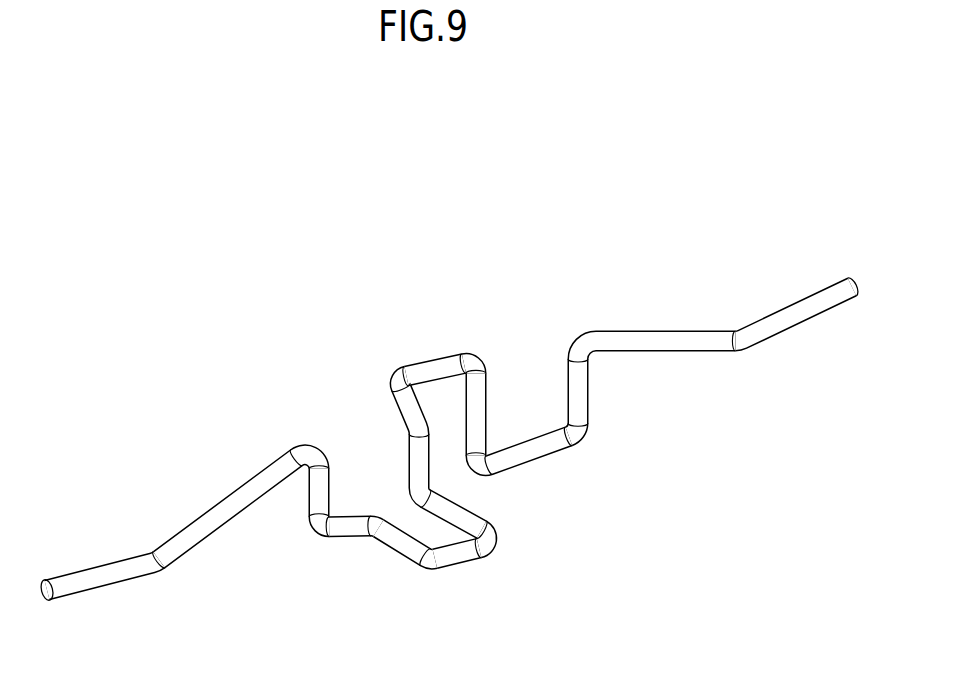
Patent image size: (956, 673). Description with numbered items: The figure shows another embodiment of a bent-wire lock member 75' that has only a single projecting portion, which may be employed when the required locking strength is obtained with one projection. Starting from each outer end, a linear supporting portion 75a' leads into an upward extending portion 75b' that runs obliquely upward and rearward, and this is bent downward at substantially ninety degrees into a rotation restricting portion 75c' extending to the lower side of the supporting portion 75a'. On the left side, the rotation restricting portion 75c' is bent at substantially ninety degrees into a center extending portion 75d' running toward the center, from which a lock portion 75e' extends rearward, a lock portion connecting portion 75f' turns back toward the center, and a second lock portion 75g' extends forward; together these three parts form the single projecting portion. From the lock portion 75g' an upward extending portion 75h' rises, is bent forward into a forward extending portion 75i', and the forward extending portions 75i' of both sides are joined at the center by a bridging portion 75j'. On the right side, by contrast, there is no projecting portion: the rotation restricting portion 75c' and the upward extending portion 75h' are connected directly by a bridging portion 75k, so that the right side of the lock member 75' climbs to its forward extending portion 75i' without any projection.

The lock member 75' is at (448, 413).
The linear supporting portion 75a' is at (448, 440).
The upward extending portion 75b' is at (447, 450).
The rotation restricting portion 75c' is at (449, 441).
The center extending portion 75d' is at (337, 556).
The lock portion 75e' is at (414, 564).
The lock portion connecting portion 75f' is at (479, 579).
The lock portion 75g' is at (495, 520).
The upward extending portion 75h' is at (447, 451).
The forward extending portion 75i' is at (428, 382).
The bridging portion 75j' is at (421, 353).
The bridging portion 75k is at (548, 448).